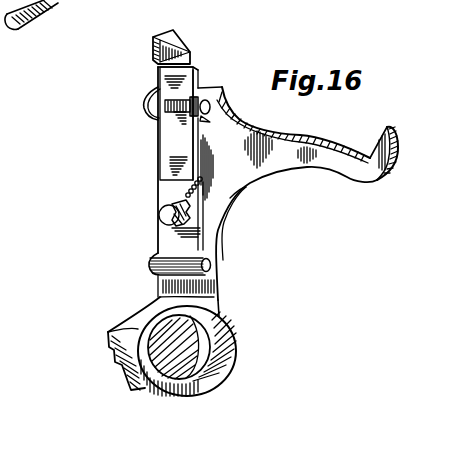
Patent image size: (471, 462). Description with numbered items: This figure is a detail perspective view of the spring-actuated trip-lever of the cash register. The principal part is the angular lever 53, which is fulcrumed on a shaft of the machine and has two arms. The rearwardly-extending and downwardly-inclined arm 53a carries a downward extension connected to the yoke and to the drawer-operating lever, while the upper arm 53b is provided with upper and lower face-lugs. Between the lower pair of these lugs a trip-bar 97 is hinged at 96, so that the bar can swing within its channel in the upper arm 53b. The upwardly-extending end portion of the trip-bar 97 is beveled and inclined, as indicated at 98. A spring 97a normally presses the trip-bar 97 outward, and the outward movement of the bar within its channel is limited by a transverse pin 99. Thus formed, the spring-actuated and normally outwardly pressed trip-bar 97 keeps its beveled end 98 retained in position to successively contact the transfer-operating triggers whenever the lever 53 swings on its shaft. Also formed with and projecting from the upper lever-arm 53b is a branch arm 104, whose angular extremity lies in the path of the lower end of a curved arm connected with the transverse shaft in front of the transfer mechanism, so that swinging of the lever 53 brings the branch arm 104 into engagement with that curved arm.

The angular lever 53 is at (220, 313).
The rearwardly-extending and downwardly-inclined arm 53a is at (110, 343).
The upper arm 53b is at (222, 217).
The hinge 96 is at (212, 264).
The trip-bar 97 is at (172, 145).
The spring 97a is at (168, 206).
The beveled and inclined end portion 98 is at (177, 33).
The transverse pin 99 is at (165, 105).
The branch arm 104 is at (377, 142).